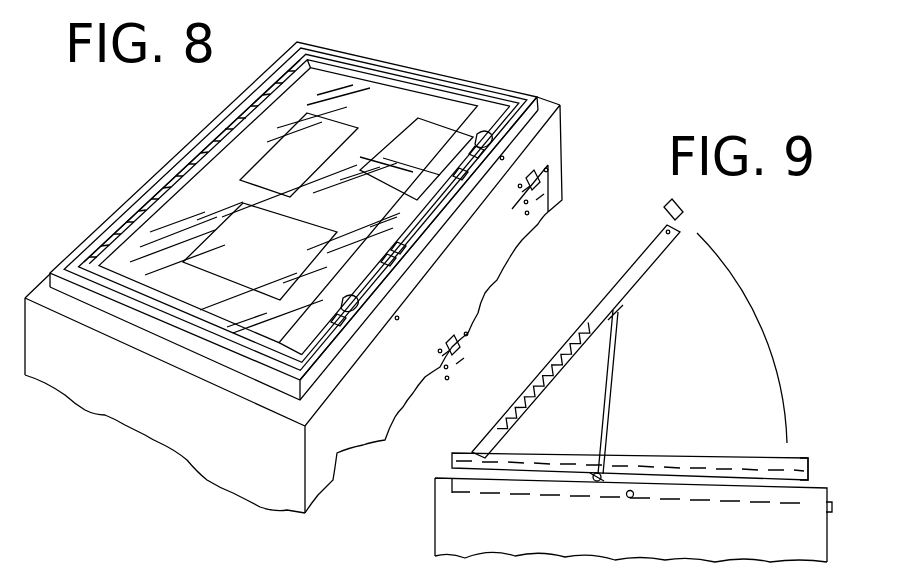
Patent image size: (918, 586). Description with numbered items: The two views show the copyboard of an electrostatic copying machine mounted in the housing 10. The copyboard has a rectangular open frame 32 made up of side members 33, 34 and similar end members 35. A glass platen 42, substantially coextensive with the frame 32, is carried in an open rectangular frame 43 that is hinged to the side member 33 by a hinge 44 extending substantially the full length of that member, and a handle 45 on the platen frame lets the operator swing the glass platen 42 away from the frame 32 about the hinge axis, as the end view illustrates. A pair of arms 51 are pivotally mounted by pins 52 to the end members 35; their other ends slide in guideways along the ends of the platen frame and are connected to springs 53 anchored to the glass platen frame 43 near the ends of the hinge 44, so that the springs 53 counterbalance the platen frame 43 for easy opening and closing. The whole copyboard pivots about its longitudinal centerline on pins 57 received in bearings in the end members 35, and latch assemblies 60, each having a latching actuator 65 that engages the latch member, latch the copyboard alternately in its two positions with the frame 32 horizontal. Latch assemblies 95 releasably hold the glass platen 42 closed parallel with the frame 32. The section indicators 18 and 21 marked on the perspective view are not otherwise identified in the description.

In FIG. 8, the housing 10 is at (187, 433).
In FIG. 9, the housing 10 is at (631, 520).
In FIG. 8, the section line 18 is at (304, 262).
In FIG. 8, the section line 21 is at (162, 155).
In FIG. 8, the rectangular open frame 32 is at (515, 88).
In FIG. 9, the rectangular open frame 32 is at (806, 457).
In FIG. 8, the side member 33 is at (107, 227).
In FIG. 8, the side member 34 is at (527, 127).
In FIG. 8, the end members 35 is at (358, 22).
In FIG. 9, the end members 35 is at (678, 470).
In FIG. 8, the glass platen 42 is at (393, 113).
In FIG. 8, the open rectangular frame 43 is at (462, 97).
In FIG. 9, the open rectangular frame 43 is at (647, 283).
In FIG. 8, the hinge 44 is at (253, 105).
In FIG. 8, the handle 45 is at (433, 220).
In FIG. 9, the handle 45 is at (660, 205).
In FIG. 9, the arms 51 is at (610, 383).
In FIG. 9, the pins 52 is at (593, 474).
In FIG. 9, the springs 53 is at (578, 340).
In FIG. 9, the pin 57 is at (634, 498).
In FIG. 8, the latch assemblies 60 is at (520, 205).
In FIG. 9, the latching actuator 65 is at (831, 508).
In FIG. 8, the latch assemblies 95 is at (483, 135).